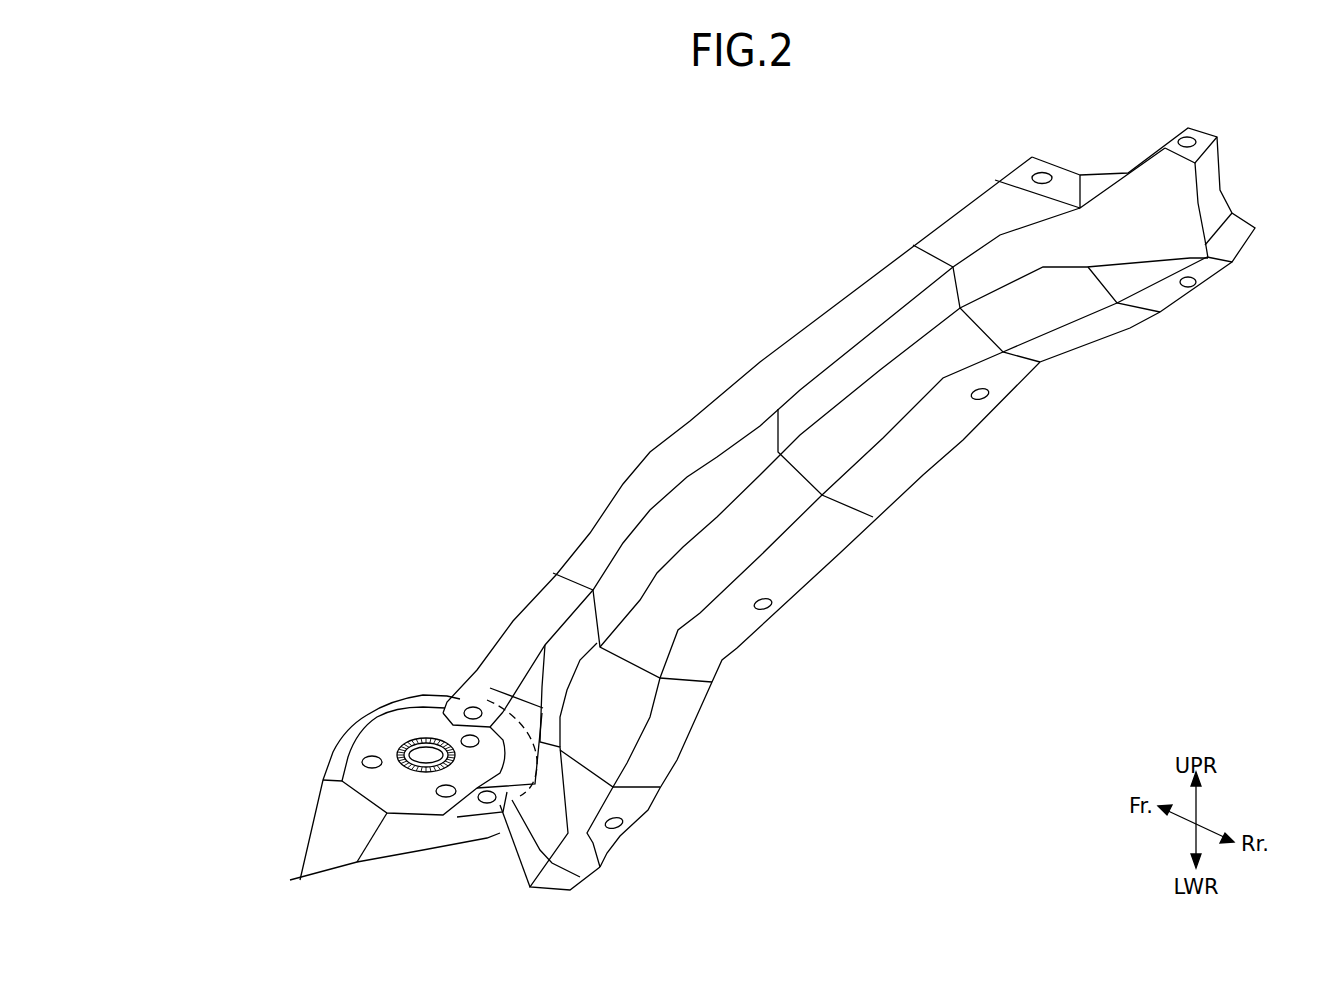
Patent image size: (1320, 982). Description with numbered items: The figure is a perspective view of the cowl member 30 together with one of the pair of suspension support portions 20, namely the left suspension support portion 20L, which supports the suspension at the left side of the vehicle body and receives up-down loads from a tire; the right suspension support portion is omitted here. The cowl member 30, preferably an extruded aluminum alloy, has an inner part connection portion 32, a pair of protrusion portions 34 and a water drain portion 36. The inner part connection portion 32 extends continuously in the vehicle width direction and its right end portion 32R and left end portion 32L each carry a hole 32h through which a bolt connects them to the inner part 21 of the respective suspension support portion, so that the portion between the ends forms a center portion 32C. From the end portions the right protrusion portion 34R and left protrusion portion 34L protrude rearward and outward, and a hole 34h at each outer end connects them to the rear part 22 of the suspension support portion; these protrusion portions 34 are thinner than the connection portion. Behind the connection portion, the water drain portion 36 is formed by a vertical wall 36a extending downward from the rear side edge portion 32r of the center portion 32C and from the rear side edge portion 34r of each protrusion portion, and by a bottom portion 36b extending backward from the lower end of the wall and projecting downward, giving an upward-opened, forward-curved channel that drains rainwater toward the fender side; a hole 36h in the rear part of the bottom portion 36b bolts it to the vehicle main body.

The suspension support portion 20 is at (357, 779).
The left suspension support portion 20L is at (370, 740).
The inner part 21 is at (390, 700).
The rear part 22 is at (323, 782).
The cowl member 30 is at (931, 226).
The inner part connection portion 32 is at (757, 362).
The center portion 32C is at (652, 479).
The left end portion 32L is at (462, 703).
The right end portion 32R is at (1013, 181).
The rear side edge portion 32r is at (827, 366).
The hole 32h is at (1042, 172).
The protrusion portion 34 is at (829, 503).
The left protrusion portion 34L is at (443, 814).
The right protrusion portion 34R is at (1153, 168).
The rear side edge portion 34r is at (1105, 195).
The hole 34h is at (1197, 140).
The water drain portion 36 is at (1035, 500).
The vertical wall 36a is at (806, 402).
The bottom portion 36b is at (820, 518).
The hole 36h is at (990, 395).